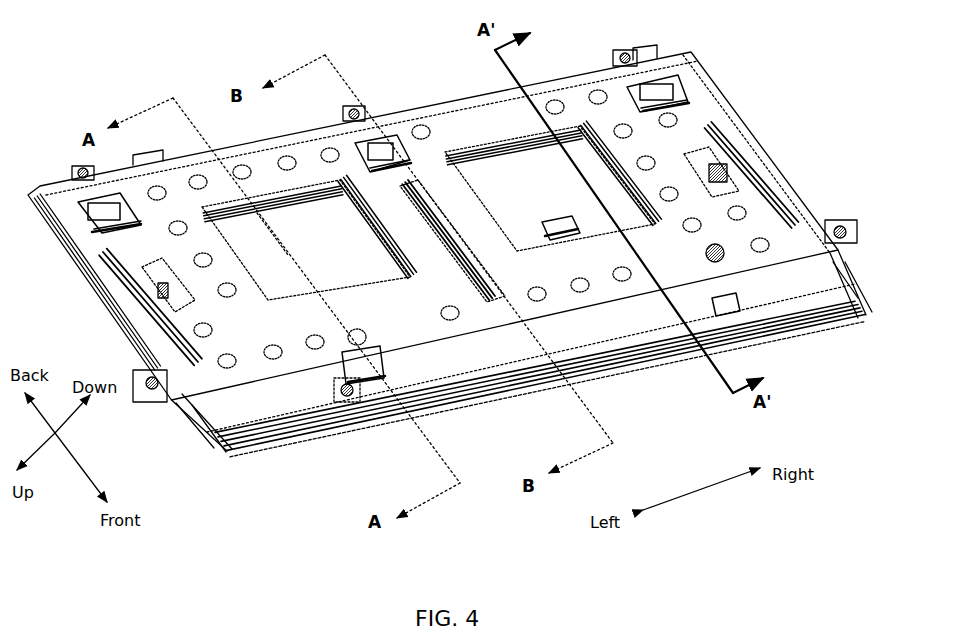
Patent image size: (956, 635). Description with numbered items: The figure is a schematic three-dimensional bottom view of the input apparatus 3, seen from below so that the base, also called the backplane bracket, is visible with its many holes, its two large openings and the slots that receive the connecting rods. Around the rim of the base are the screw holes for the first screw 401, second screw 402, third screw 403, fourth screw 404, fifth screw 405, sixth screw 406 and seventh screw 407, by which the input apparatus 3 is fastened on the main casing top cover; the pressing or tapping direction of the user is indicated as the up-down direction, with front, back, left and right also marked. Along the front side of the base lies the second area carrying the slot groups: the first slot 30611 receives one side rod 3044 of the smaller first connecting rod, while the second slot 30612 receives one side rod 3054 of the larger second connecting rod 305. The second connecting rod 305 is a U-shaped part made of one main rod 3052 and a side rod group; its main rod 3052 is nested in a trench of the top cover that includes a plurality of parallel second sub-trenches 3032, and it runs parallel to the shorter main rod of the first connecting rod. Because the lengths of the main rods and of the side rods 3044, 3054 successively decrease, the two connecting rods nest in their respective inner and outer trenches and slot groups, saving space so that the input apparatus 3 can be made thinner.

The input apparatus 3 is at (748, 343).
The second connecting rod 305 is at (327, 422).
The second sub-trench 3032 is at (250, 425).
The side rod 3044 is at (372, 378).
The main rod 3052 is at (533, 375).
The side rod 3054 is at (218, 420).
The first slot 30611 is at (360, 370).
The second slot 30612 is at (222, 416).
The first screw 401 is at (80, 173).
The second screw 402 is at (345, 114).
The third screw 403 is at (622, 57).
The fourth screw 404 is at (148, 403).
The fifth screw 405 is at (843, 222).
The sixth screw 406 is at (352, 403).
The seventh screw 407 is at (797, 333).